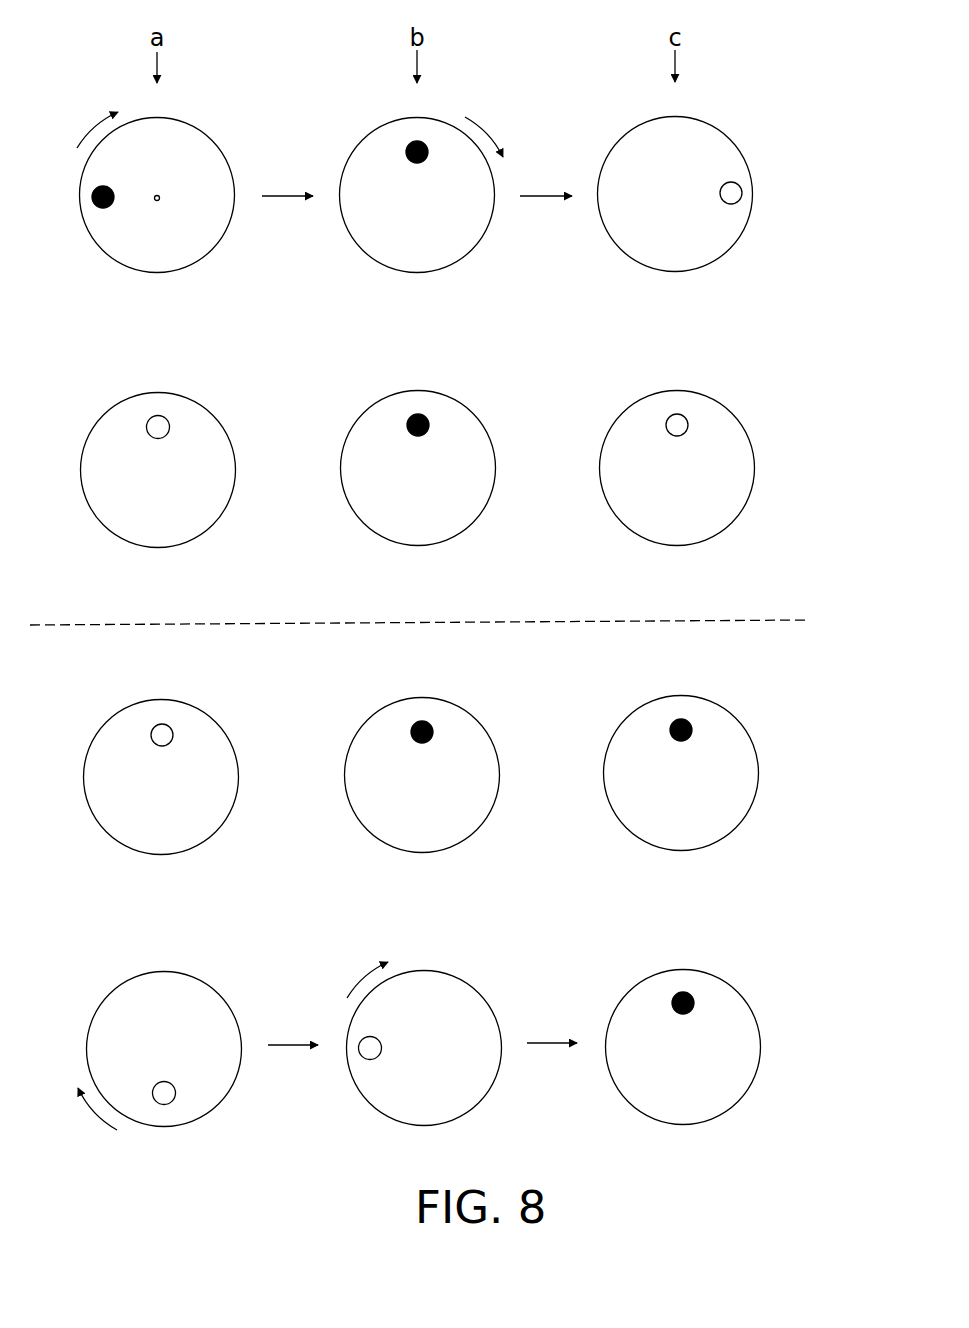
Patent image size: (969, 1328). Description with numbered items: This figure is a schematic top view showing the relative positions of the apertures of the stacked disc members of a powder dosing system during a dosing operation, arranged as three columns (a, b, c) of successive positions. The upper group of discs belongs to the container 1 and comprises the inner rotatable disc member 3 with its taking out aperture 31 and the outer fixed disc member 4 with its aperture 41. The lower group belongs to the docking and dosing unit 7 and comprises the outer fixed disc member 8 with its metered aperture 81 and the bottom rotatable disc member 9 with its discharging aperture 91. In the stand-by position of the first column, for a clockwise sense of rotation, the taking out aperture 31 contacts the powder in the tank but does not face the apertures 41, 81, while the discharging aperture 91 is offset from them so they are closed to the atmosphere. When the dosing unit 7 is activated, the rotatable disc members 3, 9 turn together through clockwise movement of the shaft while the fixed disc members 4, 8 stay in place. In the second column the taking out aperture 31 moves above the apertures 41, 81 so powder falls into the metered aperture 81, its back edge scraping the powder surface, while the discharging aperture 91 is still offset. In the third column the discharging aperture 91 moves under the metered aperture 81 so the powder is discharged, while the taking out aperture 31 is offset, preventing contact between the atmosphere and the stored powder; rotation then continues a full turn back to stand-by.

The container 1 is at (828, 72).
The inner rotatable disc member 3 is at (161, 200).
The taking out aperture 31 is at (103, 207).
The outer fixed disc member 4 is at (171, 461).
The aperture of outer fixed disc member 41 is at (157, 420).
The docking and dosing unit 7 is at (835, 652).
The outer fixed disc member 8 is at (174, 768).
The metered aperture 81 is at (161, 728).
The bottom rotatable disc member 9 is at (172, 1069).
The discharging aperture 91 is at (164, 1102).